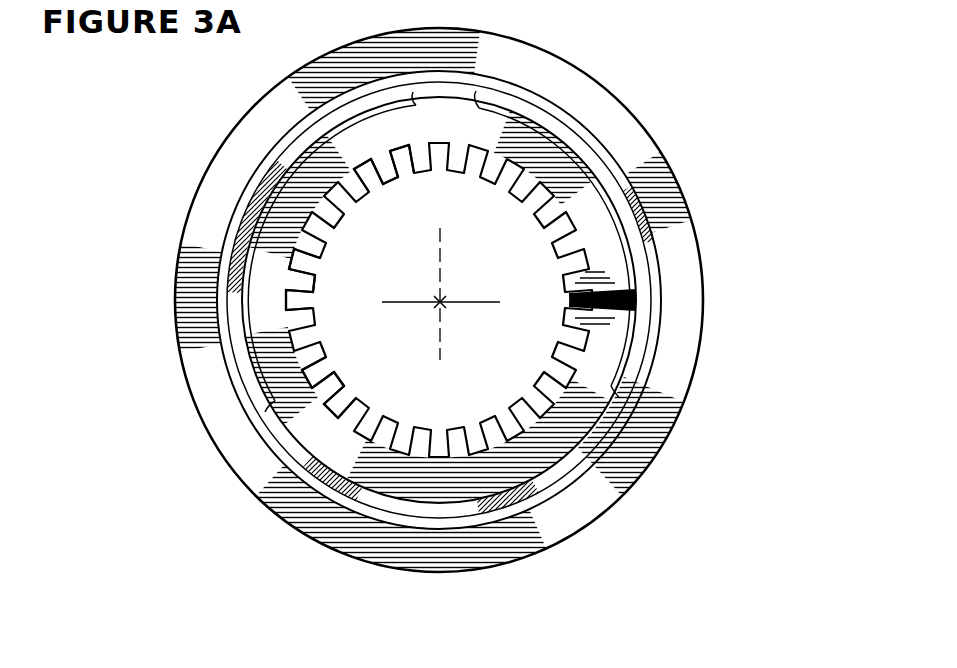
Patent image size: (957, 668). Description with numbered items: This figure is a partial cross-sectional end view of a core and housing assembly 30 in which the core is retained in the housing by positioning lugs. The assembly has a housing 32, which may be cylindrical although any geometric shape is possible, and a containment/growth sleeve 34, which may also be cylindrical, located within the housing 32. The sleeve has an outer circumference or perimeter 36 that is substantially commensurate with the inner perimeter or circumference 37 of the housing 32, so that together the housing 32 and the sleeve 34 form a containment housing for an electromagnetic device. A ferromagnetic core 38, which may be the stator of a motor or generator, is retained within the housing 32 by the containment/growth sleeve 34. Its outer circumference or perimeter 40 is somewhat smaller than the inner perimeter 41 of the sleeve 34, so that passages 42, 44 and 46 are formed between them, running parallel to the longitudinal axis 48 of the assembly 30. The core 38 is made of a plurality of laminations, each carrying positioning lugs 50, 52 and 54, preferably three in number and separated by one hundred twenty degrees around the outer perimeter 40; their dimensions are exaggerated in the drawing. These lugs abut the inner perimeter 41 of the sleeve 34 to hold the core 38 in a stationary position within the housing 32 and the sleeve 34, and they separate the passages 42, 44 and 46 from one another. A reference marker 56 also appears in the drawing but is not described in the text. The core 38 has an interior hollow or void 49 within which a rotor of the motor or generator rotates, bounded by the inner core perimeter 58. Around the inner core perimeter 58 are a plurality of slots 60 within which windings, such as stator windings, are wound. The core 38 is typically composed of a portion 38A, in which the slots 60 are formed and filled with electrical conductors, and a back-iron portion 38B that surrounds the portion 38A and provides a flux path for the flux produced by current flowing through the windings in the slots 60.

The core and housing assembly 30 is at (712, 145).
The housing 32 is at (690, 349).
The containment/growth sleeve 34 is at (580, 473).
The outer circumference or perimeter 36 is at (558, 493).
The inner perimeter or circumference 37 is at (653, 385).
The ferromagnetic core 38 is at (253, 293).
The portion 38A is at (343, 400).
The back-iron portion 38B is at (550, 150).
The outer circumference or perimeter 40 is at (243, 250).
The inner perimeter 41 is at (243, 197).
The passage 42 is at (643, 286).
The passage 44 is at (310, 458).
The passage 46 is at (272, 164).
The longitudinal axis 48 is at (444, 306).
The interior hollow or void 49 is at (516, 271).
The positioning lug 50 is at (418, 92).
The positioning lug 52 is at (628, 407).
The positioning lug 54 is at (253, 413).
The lower seal 56 is at (350, 500).
The inner core perimeter 58 is at (375, 185).
The slots 60 is at (296, 277).